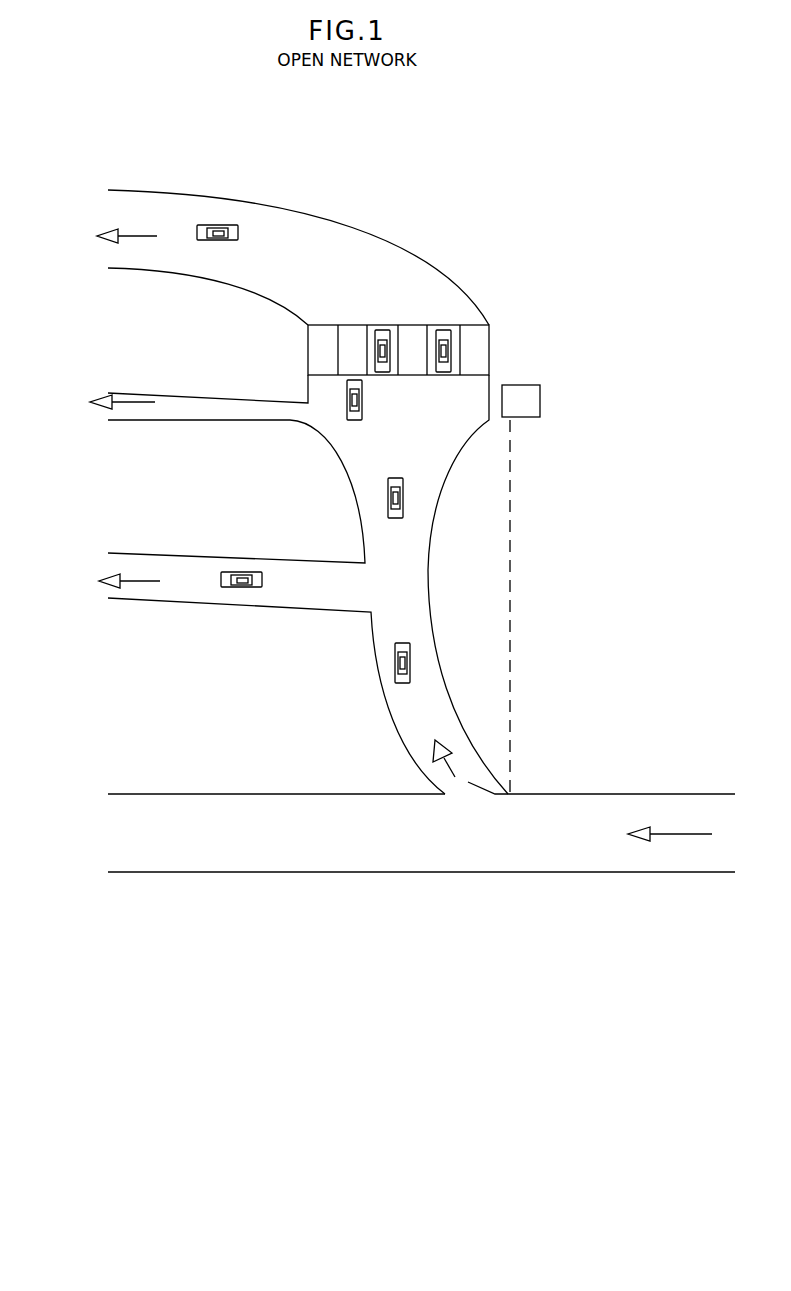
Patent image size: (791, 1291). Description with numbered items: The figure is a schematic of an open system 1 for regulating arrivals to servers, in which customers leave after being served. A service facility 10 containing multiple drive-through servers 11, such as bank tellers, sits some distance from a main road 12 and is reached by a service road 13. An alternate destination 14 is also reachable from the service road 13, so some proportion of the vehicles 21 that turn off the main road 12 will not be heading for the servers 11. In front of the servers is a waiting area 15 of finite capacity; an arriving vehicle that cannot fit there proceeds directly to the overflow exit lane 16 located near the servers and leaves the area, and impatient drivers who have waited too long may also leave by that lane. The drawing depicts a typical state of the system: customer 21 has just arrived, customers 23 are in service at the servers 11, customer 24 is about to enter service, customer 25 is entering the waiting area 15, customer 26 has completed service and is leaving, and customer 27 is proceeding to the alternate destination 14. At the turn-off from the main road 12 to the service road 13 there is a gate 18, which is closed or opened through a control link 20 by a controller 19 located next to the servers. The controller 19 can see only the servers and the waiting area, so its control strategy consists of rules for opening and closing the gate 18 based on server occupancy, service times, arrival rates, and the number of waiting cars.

The system for regulating arrivals 1 is at (548, 177).
The service facility 10 is at (494, 353).
The drive-through servers 11 is at (362, 340).
The main road 12 is at (515, 850).
The service road 13 is at (402, 706).
The alternate destination 14 is at (198, 588).
The waiting area 15 is at (367, 461).
The overflow exit lane 16 is at (199, 405).
The gate 18 is at (468, 788).
The controller 19 is at (540, 404).
The control link 20 is at (512, 560).
The vehicles 21 is at (394, 660).
The customers in service 23 is at (438, 328).
The customer about to enter service 24 is at (356, 421).
The customer entering waiting area 25 is at (388, 520).
The customer leaving system 26 is at (238, 238).
The customer proceeding to alternate destination 27 is at (262, 572).